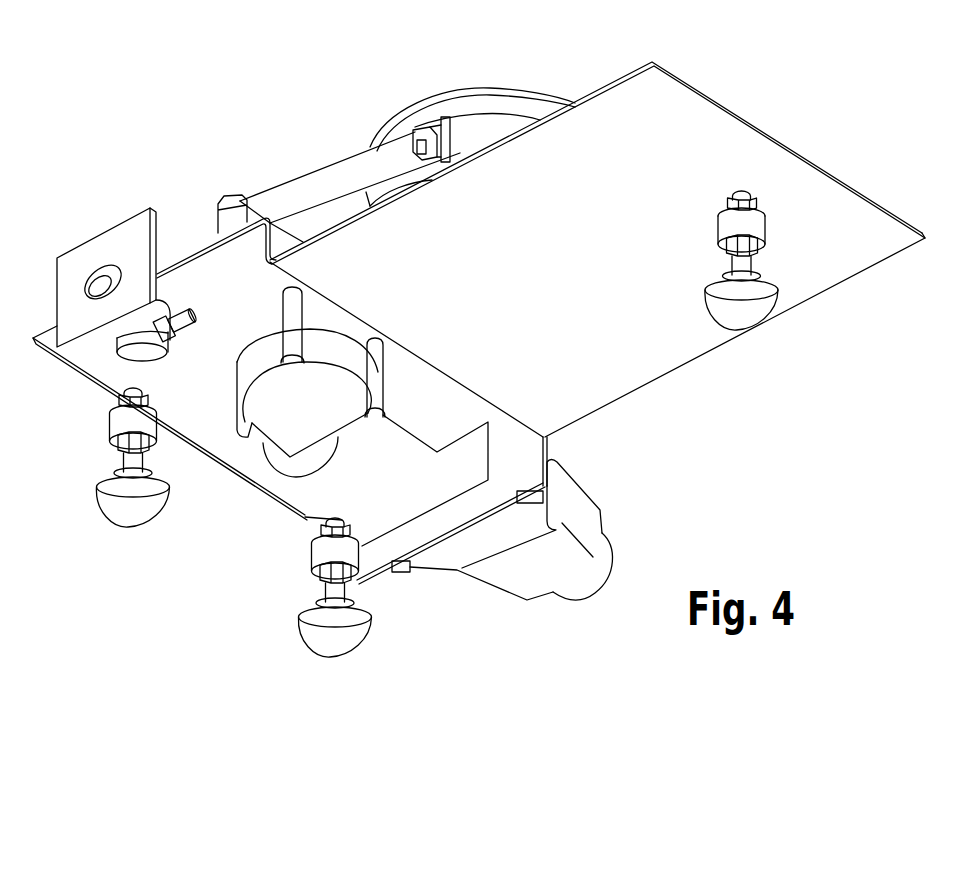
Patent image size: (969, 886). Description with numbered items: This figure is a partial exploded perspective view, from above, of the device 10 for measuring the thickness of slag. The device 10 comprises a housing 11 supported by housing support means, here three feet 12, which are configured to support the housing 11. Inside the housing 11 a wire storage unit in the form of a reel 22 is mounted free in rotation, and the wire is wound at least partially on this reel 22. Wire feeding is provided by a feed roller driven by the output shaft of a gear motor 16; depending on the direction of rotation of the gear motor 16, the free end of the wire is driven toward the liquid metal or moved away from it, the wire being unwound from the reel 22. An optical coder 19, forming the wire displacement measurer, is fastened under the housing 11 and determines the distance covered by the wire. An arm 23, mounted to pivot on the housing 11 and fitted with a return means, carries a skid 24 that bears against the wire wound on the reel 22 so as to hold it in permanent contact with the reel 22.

The device for measuring the thickness of the slag 10 is at (724, 79).
The housing 11 is at (770, 167).
The feet 12 is at (750, 299).
The gear motor 16 is at (392, 490).
The optical coder 19 is at (133, 352).
The reel 22 is at (503, 104).
The arm 23 is at (318, 190).
The skid 24 is at (432, 127).